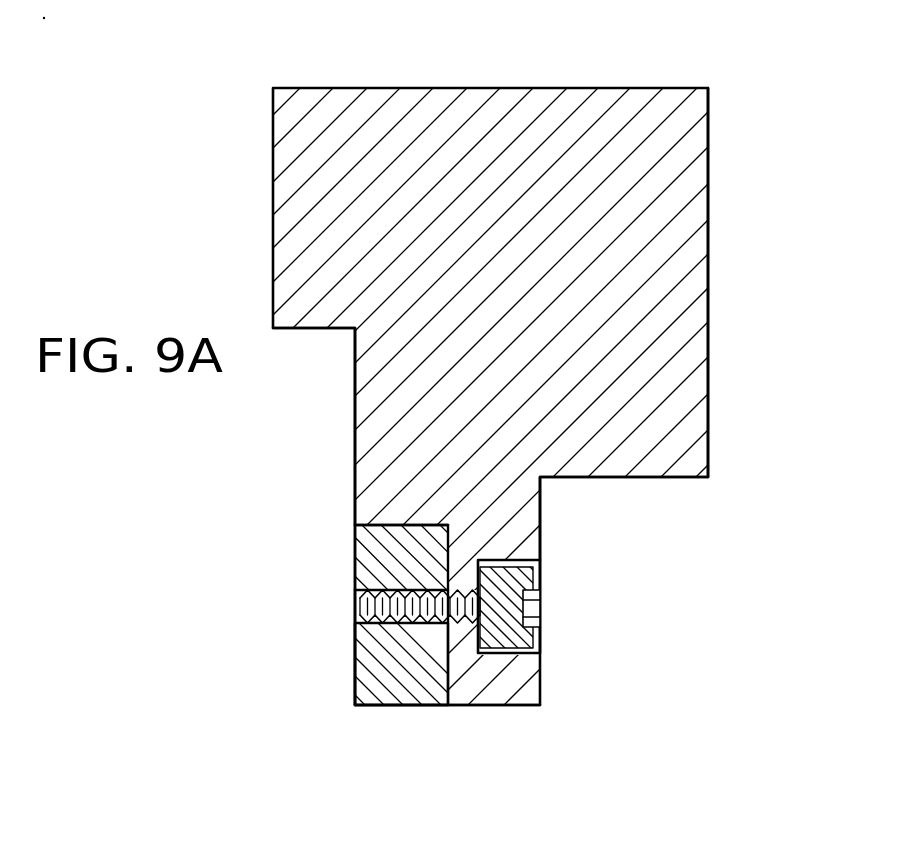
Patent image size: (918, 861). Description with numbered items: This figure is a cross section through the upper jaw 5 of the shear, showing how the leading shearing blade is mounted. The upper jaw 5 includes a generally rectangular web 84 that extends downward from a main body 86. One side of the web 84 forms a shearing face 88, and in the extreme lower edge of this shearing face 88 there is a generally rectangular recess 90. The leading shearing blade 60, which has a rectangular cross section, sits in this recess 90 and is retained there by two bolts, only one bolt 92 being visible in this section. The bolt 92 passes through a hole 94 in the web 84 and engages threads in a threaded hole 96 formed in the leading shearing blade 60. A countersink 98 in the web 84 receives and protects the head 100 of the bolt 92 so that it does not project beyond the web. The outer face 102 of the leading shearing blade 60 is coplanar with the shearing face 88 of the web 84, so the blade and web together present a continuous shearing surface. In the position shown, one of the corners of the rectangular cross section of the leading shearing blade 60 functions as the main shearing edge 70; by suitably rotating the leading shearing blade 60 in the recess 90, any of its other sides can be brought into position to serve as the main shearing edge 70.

The upper jaw 5 is at (640, 86).
The main body 86 is at (688, 387).
The web 84 is at (530, 513).
The shearing face 88 is at (355, 398).
The recess 90 is at (383, 523).
The bolt 92 is at (360, 594).
The leading shearing blade 60 is at (365, 645).
The outer face 102 is at (355, 665).
The main shearing edge 70 is at (355, 707).
The threaded hole 96 is at (430, 623).
The hole 94 is at (455, 625).
The countersink 98 is at (543, 655).
The head 100 is at (542, 637).